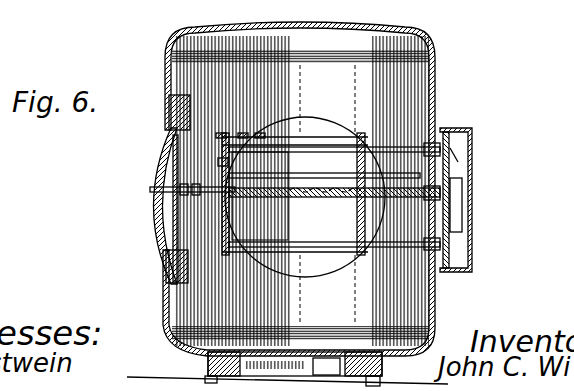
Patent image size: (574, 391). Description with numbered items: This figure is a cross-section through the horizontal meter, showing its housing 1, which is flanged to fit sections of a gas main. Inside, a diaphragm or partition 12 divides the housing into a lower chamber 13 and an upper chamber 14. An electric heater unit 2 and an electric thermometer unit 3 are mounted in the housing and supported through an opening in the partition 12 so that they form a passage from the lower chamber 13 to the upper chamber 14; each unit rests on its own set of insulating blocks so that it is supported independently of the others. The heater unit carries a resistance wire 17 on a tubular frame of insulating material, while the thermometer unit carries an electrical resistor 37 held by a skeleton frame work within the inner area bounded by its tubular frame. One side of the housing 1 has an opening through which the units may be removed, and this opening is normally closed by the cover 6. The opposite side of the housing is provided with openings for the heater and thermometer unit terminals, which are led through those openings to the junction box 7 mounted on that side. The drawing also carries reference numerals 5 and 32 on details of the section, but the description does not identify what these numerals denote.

The housing 1 is at (402, 43).
The electric heater unit 2 is at (243, 134).
The electric thermometer unit 3 is at (259, 134).
The latch 5 is at (218, 162).
The cover 6 is at (161, 148).
The junction box 7 is at (476, 156).
The partition 12 is at (380, 198).
The lower chamber 13 is at (331, 221).
The upper chamber 14 is at (396, 64).
The resistance wire 17 is at (327, 194).
The clamp 32 is at (220, 135).
The electrical resistor 37 is at (305, 117).